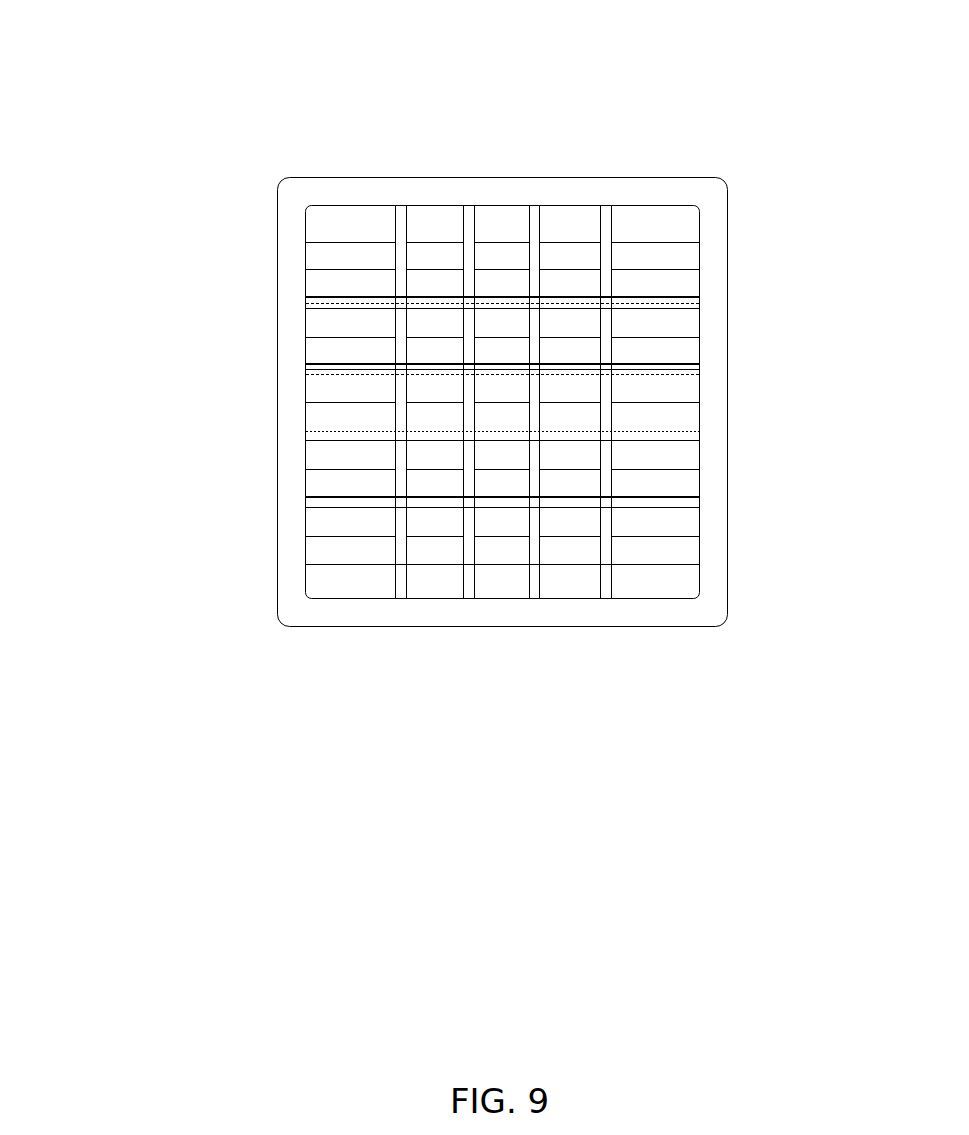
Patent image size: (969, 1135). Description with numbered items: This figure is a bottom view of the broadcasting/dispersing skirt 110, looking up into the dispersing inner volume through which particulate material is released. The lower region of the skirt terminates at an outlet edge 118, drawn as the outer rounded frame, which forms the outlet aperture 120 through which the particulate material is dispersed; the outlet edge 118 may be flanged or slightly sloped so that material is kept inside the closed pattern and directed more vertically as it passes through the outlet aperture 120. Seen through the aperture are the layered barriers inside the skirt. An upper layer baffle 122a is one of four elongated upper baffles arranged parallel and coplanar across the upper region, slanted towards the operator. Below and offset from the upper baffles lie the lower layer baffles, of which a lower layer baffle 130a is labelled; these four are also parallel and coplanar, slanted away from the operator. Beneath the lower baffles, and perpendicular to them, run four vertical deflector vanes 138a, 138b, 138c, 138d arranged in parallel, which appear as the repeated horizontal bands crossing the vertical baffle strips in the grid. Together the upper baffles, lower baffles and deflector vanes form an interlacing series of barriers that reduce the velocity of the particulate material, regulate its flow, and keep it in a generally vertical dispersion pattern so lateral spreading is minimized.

The broadcasting/dispersing skirt 110 is at (140, 73).
The outlet edge 118 is at (432, 190).
The outlet aperture 120 is at (333, 583).
The upper layer baffle 122a is at (675, 247).
The vertical deflector vane 138a is at (675, 300).
The vertical deflector vane 138b is at (675, 365).
The vertical deflector vane 138c is at (685, 433).
The vertical deflector vane 138d is at (685, 508).
The lower layer baffle 130a is at (676, 563).